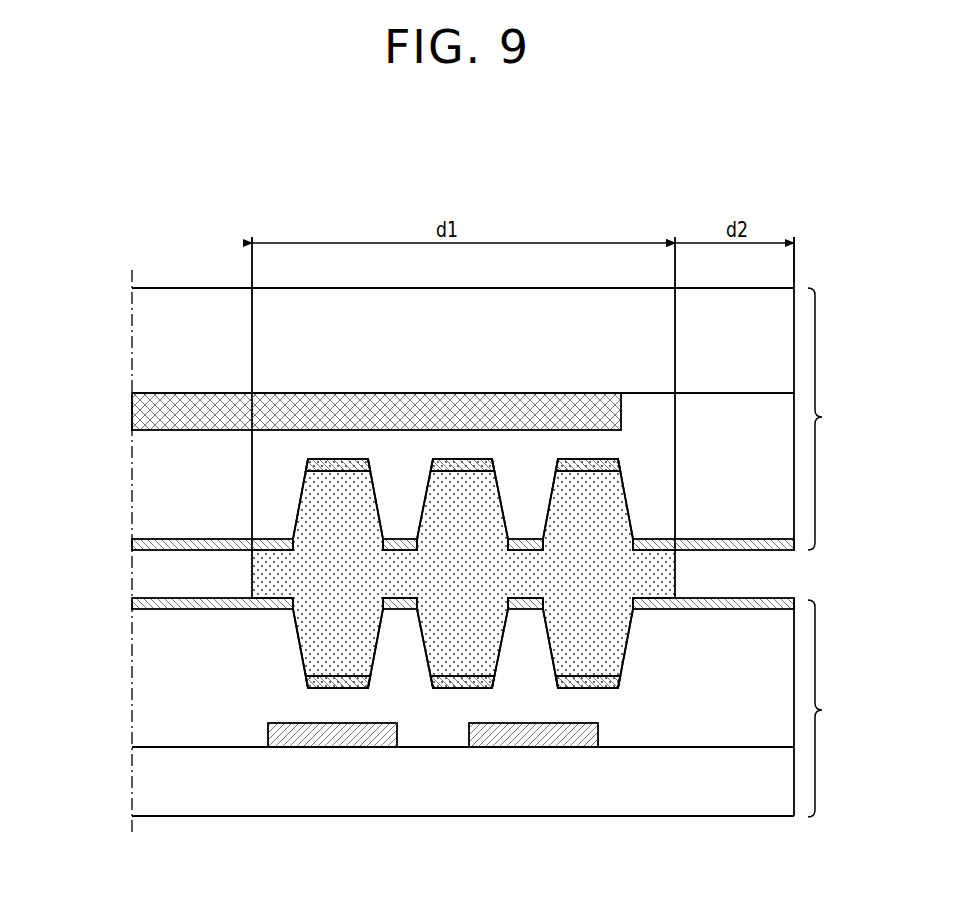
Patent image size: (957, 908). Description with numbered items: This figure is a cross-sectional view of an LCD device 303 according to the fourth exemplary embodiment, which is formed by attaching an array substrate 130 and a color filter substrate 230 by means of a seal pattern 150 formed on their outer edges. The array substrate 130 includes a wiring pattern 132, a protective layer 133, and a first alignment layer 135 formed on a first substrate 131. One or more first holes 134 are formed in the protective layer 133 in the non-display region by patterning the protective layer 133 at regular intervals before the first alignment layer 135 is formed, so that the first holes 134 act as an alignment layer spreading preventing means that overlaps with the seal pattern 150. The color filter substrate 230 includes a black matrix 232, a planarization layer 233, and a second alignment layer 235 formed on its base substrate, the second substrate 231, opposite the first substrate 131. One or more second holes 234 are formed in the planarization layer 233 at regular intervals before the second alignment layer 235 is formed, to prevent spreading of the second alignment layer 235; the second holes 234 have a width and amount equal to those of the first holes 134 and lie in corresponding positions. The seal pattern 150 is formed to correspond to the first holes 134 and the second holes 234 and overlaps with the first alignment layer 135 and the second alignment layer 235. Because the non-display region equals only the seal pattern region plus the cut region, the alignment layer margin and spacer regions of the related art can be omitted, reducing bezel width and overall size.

The LCD device 303 is at (793, 218).
The color filter substrate 230 is at (831, 419).
The upper base substrate 231 is at (138, 342).
The black matrix 232 is at (135, 411).
The planarization layer 233 is at (139, 463).
The second holes 234 is at (326, 492).
The second alignment layer 235 is at (135, 545).
The array substrate 130 is at (831, 708).
The first substrate 131 is at (139, 788).
The wiring pattern 132 is at (278, 732).
The protective layer 133 is at (139, 678).
The first holes 134 is at (326, 642).
The first alignment layer 135 is at (135, 605).
The seal pattern 150 is at (451, 665).